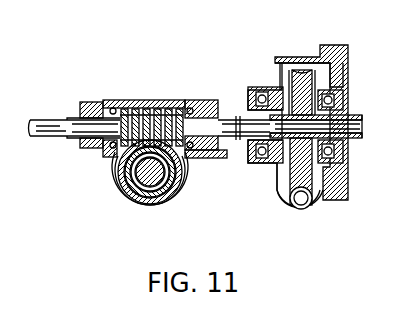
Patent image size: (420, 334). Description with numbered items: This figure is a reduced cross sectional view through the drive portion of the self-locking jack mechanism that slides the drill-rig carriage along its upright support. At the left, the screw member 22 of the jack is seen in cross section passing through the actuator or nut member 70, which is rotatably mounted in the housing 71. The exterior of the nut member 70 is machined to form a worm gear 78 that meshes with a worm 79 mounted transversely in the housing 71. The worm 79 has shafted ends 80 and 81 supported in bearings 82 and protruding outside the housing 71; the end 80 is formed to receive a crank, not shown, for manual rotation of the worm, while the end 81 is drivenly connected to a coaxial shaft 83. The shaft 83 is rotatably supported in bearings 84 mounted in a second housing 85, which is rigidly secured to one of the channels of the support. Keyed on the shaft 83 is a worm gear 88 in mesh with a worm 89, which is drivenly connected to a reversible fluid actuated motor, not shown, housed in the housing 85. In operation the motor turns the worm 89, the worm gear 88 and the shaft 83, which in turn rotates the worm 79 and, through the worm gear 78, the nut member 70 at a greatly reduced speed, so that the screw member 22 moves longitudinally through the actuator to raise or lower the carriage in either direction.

The screw member 22 is at (156, 178).
The nut member 70 is at (122, 190).
The housing 71 is at (131, 204).
The worm gear 78 is at (128, 172).
The worm 79 is at (143, 105).
The shafted end 80 is at (38, 137).
The shafted end 81 is at (224, 140).
The bearings 82 is at (110, 112).
The shaft 83 is at (362, 115).
The bearings 84 is at (267, 165).
The housing 85 is at (305, 60).
The worm gear 88 is at (298, 98).
The worm 89 is at (290, 206).